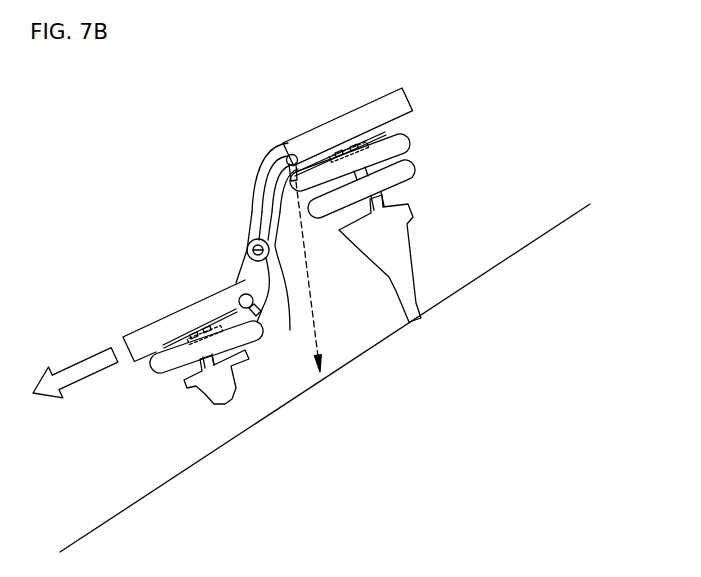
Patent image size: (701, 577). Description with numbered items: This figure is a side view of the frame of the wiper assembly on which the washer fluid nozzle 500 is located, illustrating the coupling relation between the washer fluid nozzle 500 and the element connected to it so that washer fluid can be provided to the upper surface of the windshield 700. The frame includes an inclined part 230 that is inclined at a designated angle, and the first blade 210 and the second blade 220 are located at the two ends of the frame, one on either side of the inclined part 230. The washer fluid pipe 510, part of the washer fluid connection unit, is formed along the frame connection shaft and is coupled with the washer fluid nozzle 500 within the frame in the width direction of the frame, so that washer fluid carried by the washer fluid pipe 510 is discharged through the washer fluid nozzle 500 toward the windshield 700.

The first blade 210 is at (397, 115).
The second blade 220 is at (157, 340).
The inclined part 230 is at (290, 328).
The washer fluid nozzle 500 is at (290, 153).
The washer fluid pipe 510 is at (260, 215).
The windshield 700 is at (497, 266).